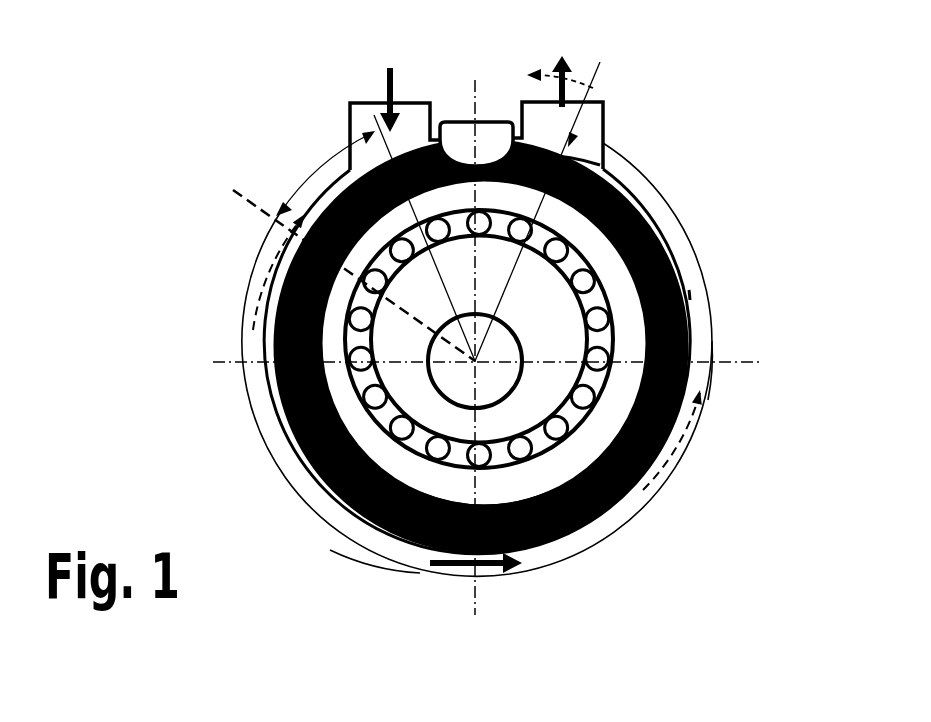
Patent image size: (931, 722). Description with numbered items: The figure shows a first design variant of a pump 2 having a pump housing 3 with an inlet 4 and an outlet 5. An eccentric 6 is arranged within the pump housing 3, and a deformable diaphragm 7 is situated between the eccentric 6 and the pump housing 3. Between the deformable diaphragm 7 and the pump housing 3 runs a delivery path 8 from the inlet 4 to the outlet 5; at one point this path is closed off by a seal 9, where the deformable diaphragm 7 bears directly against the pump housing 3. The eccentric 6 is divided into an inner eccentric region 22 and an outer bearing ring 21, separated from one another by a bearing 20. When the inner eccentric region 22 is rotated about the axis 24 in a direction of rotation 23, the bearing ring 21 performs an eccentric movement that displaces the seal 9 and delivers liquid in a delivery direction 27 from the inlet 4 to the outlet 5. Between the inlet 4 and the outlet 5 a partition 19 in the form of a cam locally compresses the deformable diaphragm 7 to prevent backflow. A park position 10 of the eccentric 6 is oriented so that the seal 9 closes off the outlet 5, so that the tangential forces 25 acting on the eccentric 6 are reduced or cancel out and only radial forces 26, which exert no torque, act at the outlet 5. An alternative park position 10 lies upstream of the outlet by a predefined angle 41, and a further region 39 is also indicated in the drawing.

The pump 2 is at (256, 157).
The pump housing 3 is at (245, 322).
The inlet 4 is at (374, 115).
The outlet 5 is at (533, 102).
The eccentric 6 is at (513, 493).
The deformable diaphragm 7 is at (690, 292).
The delivery path 8 is at (700, 372).
The seal 9 is at (610, 172).
The park position 10 is at (233, 190).
The partition 19 is at (468, 121).
The bearing 20 is at (667, 227).
The outer bearing ring 21 is at (620, 275).
The inner eccentric region 22 is at (540, 248).
The direction of rotation 23 is at (594, 88).
The axis 24 is at (475, 361).
The tangential forces 25 is at (680, 440).
The radial forces 26 is at (575, 143).
The delivery direction 27 is at (389, 68).
The cooling channel 39 is at (375, 545).
The predefined angle 41 is at (323, 177).